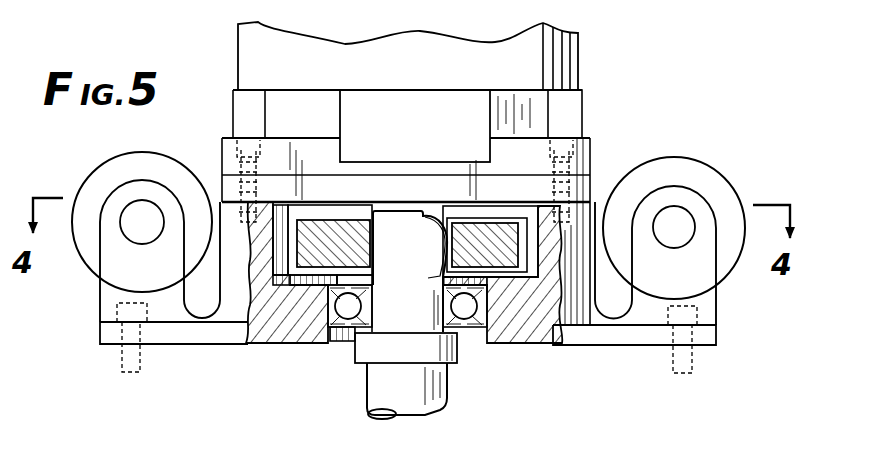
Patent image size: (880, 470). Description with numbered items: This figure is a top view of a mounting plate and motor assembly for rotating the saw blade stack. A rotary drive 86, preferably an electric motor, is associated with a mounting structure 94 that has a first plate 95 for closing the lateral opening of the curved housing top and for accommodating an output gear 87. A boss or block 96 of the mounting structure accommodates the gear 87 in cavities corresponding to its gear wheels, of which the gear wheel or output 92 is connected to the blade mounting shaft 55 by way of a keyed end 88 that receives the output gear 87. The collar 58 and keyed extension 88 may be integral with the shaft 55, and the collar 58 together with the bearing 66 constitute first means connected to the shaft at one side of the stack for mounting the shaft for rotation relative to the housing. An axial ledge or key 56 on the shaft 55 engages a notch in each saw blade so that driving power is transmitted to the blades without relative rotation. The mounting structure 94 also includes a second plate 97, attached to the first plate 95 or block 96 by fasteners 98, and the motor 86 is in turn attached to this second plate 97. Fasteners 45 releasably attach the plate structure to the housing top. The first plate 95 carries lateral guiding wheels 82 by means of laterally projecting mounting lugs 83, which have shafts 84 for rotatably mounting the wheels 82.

The rotary drive 86 is at (238, 49).
The second plate 97 is at (445, 162).
The fasteners 98 is at (230, 165).
The block 96 is at (592, 222).
The guiding wheels 82 is at (100, 171).
The shafts 84 is at (130, 233).
The lugs 83 is at (100, 318).
The first plate 95 is at (178, 332).
The fasteners 45 is at (120, 364).
The output gear 87 is at (322, 258).
The gear wheel 92 is at (503, 211).
The keyed end 88 is at (407, 259).
The bearing 66 is at (477, 327).
The collar 58 is at (355, 350).
The key 56 is at (368, 398).
The shaft 55 is at (393, 419).
The mounting structure 94 is at (600, 306).